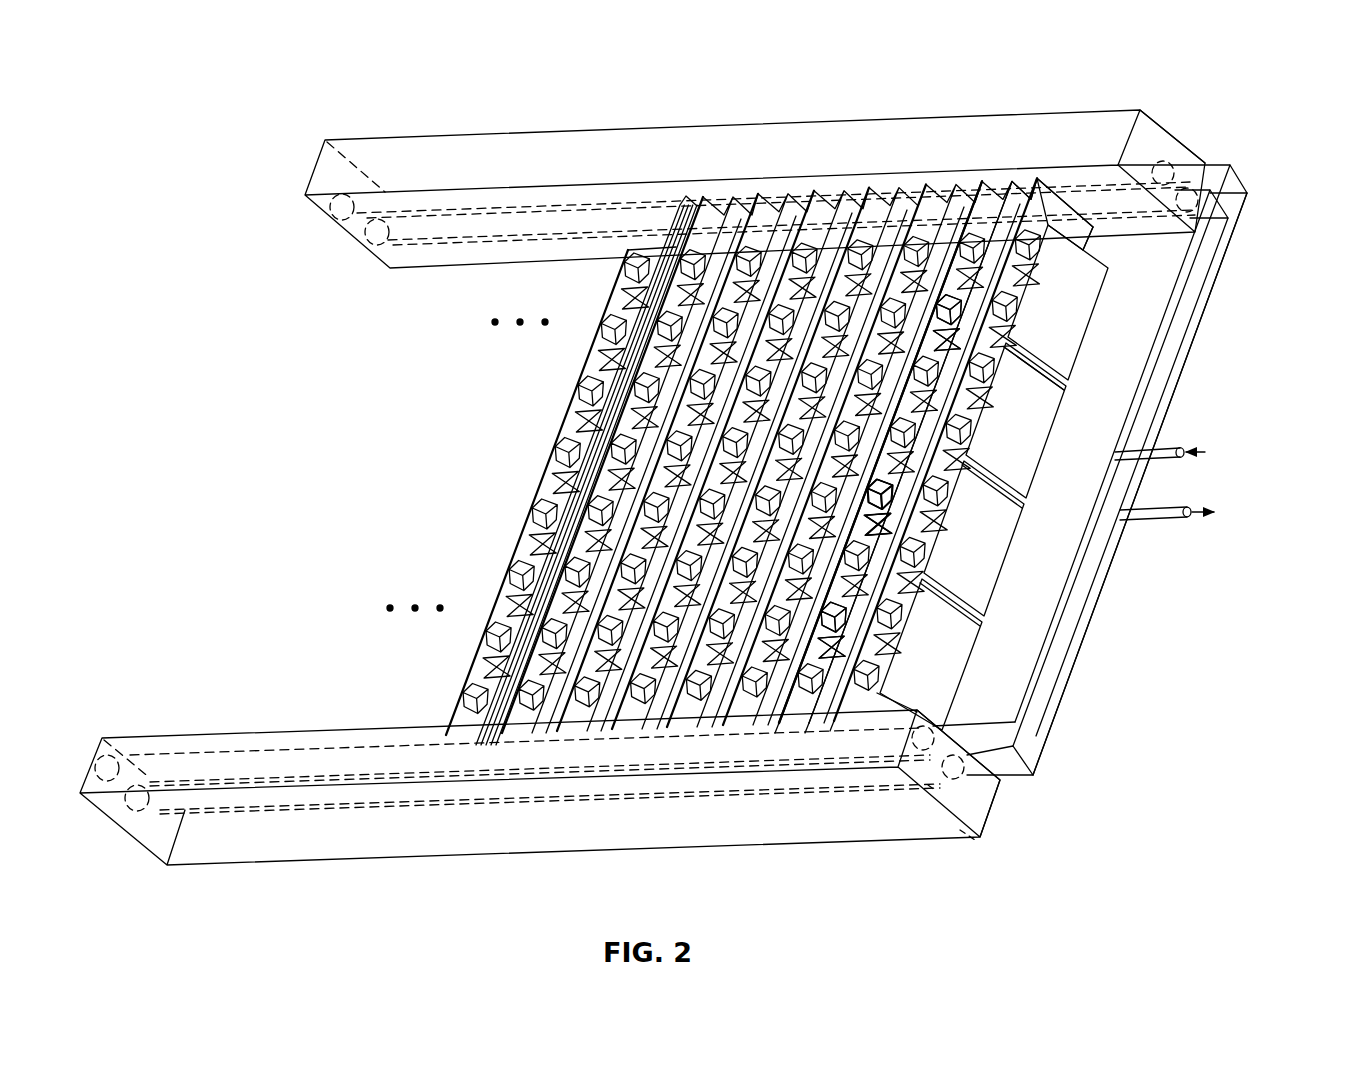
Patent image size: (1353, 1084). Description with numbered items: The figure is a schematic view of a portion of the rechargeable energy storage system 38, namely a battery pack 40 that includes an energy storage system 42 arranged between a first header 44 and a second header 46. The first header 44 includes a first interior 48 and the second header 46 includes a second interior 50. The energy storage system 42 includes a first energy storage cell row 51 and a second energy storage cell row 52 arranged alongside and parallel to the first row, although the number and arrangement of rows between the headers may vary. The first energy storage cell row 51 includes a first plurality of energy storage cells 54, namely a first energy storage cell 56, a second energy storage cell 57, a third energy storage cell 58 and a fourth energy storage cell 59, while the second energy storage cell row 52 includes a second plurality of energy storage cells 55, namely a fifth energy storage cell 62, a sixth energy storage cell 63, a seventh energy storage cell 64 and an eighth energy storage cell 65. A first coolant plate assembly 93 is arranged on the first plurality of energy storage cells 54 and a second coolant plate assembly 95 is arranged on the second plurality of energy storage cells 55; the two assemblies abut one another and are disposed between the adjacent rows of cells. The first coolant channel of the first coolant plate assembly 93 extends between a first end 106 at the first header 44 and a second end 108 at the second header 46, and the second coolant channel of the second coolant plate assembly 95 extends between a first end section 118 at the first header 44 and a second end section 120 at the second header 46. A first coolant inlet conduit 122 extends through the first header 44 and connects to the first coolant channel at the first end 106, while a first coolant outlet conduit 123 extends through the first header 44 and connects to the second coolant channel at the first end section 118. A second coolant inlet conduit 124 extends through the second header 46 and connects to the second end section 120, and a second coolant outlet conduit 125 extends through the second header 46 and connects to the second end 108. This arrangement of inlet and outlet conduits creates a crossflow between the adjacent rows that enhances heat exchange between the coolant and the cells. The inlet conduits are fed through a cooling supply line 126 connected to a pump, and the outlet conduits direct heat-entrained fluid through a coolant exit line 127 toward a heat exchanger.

The rechargeable energy storage system 38 is at (278, 74).
The battery pack 40 is at (1068, 745).
The energy storage system 42 is at (506, 520).
The first header 44 is at (670, 832).
The second header 46 is at (655, 140).
The first interior 48 is at (970, 800).
The second interior 50 is at (1152, 142).
The first energy storage cell row 51 is at (1060, 222).
The second energy storage cell row 52 is at (983, 218).
The first plurality of energy storage cells 54 is at (1062, 415).
The second plurality of energy storage cells 55 is at (748, 248).
The first energy storage cell 56 is at (944, 647).
The second energy storage cell 57 is at (990, 523).
The third energy storage cell 58 is at (1028, 430).
The fourth energy storage cell 59 is at (1074, 305).
The fifth energy storage cell 62 is at (835, 635).
The sixth energy storage cell 63 is at (878, 513).
The seventh energy storage cell 64 is at (893, 432).
The eighth energy storage cell 65 is at (955, 295).
The first coolant plate assembly 93 is at (1072, 233).
The second coolant plate assembly 95 is at (1022, 203).
The first end 106 is at (842, 732).
The second end 108 is at (1088, 213).
The first end section 118 is at (827, 732).
The second end section 120 is at (1027, 198).
The first coolant inlet conduit 122 is at (928, 780).
The first coolant outlet conduit 123 is at (967, 843).
The second coolant inlet conduit 124 is at (1150, 160).
The second coolant outlet conduit 125 is at (1250, 195).
The cooling supply line 126 is at (1175, 445).
The coolant exit line 127 is at (1160, 523).